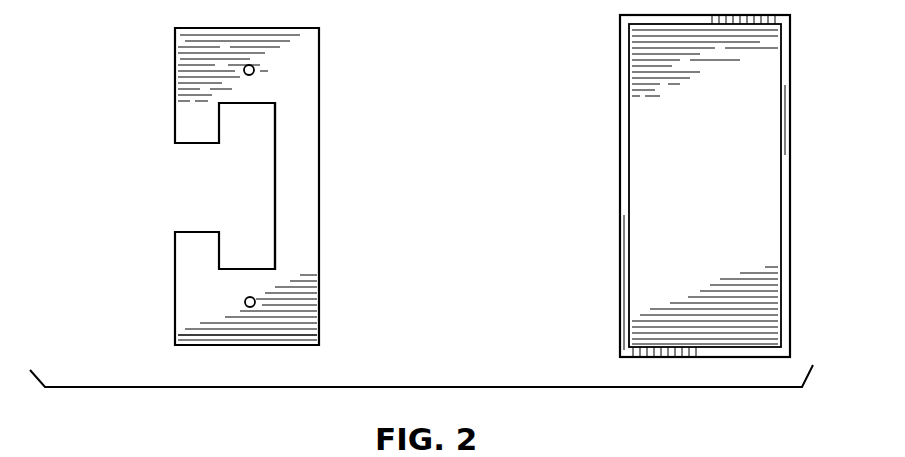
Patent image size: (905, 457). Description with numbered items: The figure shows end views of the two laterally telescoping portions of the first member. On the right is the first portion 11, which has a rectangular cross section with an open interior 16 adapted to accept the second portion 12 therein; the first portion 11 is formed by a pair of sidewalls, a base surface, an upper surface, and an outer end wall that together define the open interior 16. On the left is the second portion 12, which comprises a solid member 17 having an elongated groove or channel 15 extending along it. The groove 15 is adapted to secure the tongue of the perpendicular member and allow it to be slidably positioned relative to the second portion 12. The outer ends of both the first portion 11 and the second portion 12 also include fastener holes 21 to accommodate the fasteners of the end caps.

The first portion 11 is at (596, 211).
The second portion 12 is at (148, 292).
The groove 15 is at (228, 205).
The open interior 16 is at (659, 152).
The solid member 17 is at (243, 324).
The fastener holes 21 is at (255, 70).